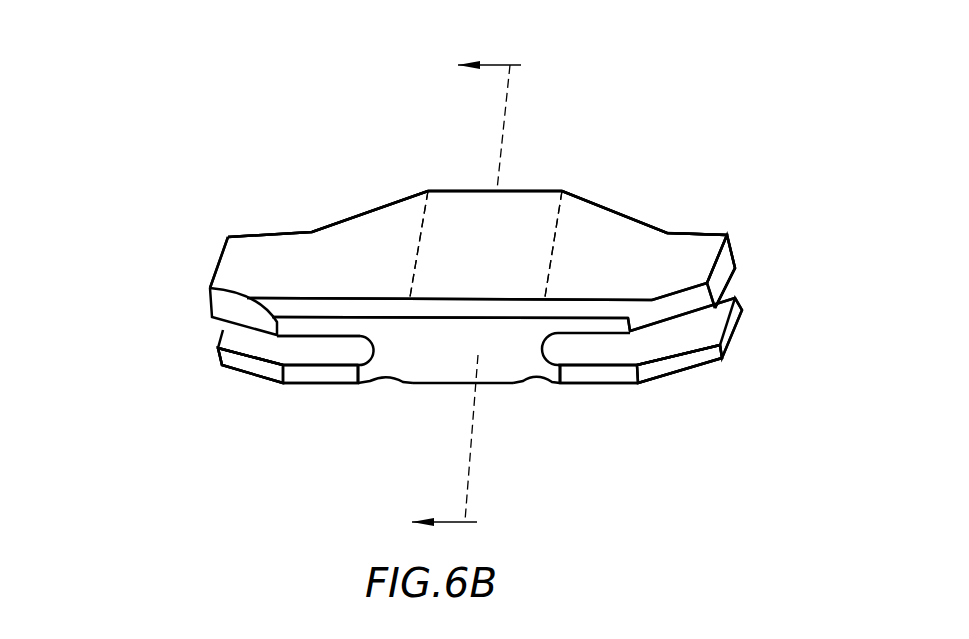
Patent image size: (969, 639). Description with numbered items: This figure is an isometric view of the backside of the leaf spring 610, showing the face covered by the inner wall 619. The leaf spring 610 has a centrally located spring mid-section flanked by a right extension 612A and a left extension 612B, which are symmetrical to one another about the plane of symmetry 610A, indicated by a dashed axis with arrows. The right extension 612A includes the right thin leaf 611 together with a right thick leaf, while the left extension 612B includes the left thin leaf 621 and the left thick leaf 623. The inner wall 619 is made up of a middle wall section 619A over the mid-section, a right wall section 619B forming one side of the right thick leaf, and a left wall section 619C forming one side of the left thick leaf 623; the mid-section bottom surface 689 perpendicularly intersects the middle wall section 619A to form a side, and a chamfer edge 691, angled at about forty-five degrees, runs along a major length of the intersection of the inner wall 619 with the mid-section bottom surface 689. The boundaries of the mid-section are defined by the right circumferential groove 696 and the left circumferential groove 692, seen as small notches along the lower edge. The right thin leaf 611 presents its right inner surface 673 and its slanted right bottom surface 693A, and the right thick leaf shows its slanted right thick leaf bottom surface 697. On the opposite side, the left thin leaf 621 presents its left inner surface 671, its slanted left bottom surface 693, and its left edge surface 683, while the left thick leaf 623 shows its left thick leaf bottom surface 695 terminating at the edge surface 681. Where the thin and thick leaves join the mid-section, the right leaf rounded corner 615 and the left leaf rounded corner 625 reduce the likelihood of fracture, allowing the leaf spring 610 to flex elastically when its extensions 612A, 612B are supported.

The leaf spring 610 is at (104, 91).
The plane of symmetry 610A is at (508, 90).
The right thin leaf 611 is at (256, 390).
The right extension 612A is at (312, 395).
The left extension 612B is at (622, 397).
The right leaf rounded corner 615 is at (367, 357).
The inner wall 619 is at (533, 182).
The middle wall section 619A is at (509, 196).
The right wall section 619B is at (361, 240).
The left wall section 619C is at (605, 255).
The left thin leaf 621 is at (682, 380).
The left thick leaf 623 is at (698, 222).
The left leaf rounded corner 625 is at (555, 348).
The left inner surface 671 is at (604, 347).
The right inner surface 673 is at (320, 350).
The edge surface 681 is at (718, 268).
The left edge surface 683 is at (730, 330).
The mid-section bottom surface 689 is at (498, 363).
The chamfer edge 691 is at (482, 300).
The left circumferential groove 692 is at (536, 382).
The left bottom surface 693 is at (708, 357).
The right bottom surface 693A is at (253, 363).
The left thick leaf bottom surface 695 is at (675, 303).
The right circumferential groove 696 is at (395, 380).
The right thick leaf bottom surface 697 is at (242, 310).